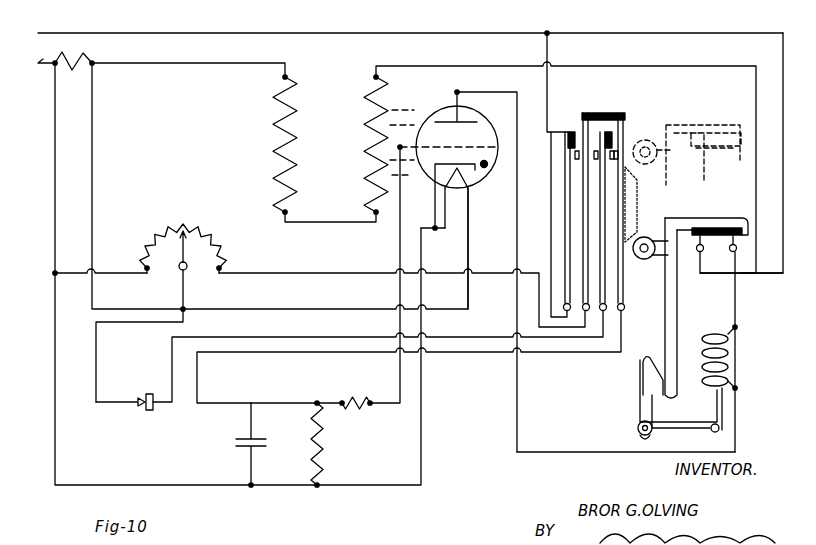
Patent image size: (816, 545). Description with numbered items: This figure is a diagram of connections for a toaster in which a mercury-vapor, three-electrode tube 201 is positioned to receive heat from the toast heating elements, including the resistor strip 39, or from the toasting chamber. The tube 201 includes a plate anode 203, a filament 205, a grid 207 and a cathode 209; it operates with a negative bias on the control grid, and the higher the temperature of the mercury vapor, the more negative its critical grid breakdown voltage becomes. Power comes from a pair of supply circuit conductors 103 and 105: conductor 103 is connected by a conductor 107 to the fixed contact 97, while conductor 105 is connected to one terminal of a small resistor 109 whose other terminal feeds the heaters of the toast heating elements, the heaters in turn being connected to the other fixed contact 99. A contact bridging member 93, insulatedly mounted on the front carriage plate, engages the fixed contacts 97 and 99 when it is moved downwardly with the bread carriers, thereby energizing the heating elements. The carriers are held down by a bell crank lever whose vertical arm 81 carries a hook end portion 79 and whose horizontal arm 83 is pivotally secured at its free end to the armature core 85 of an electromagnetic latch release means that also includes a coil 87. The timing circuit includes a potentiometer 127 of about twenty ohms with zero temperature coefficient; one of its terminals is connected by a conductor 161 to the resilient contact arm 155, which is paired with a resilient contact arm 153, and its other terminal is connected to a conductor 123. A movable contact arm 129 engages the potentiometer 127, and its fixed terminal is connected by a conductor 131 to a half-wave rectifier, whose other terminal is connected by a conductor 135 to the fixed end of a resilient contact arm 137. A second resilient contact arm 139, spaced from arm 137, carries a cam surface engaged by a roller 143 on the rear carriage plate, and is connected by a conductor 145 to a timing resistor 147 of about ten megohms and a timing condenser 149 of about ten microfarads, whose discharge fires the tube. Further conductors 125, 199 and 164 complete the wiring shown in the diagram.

The supply circuit conductor 103 is at (70, 33).
The conductor 107 is at (682, 28).
The supply circuit conductor 105 is at (30, 74).
The small resistor 109 is at (76, 72).
The conductor 123 is at (54, 192).
The conductor 125 is at (92, 157).
The resistor strip 39 is at (362, 146).
The plate anode 203 is at (453, 118).
The anode conductor 199 is at (540, 80).
The mercury-vapor three-electrode tube 201 is at (488, 163).
The cathode 209 is at (460, 190).
The grid 207 is at (470, 185).
The filament 205 is at (450, 200).
The potentiometer 127 is at (194, 230).
The movable contact arm 129 is at (188, 270).
The conductor 161 is at (287, 273).
The conductor 131 is at (96, 340).
The conductor 135 is at (365, 337).
The conductor 145 is at (265, 353).
The timing condenser 149 is at (238, 440).
The timing resistor 147 is at (322, 462).
The conductor 164 is at (525, 452).
The resilient contact arm 153 is at (552, 134).
The resilient contact arm 137 is at (572, 132).
The resilient contact arm 155 is at (588, 112).
The second resilient contact arm 139 is at (624, 114).
The roller 143 is at (645, 260).
The contact bridging member 93 is at (746, 228).
The fixed contact 97 is at (698, 256).
The fixed contact 99 is at (730, 256).
The vertical arm 81 is at (640, 390).
The hook end portion 79 is at (648, 357).
The armature core 85 is at (722, 408).
The horizontal arm 83 is at (645, 443).
The coil 87 is at (730, 357).